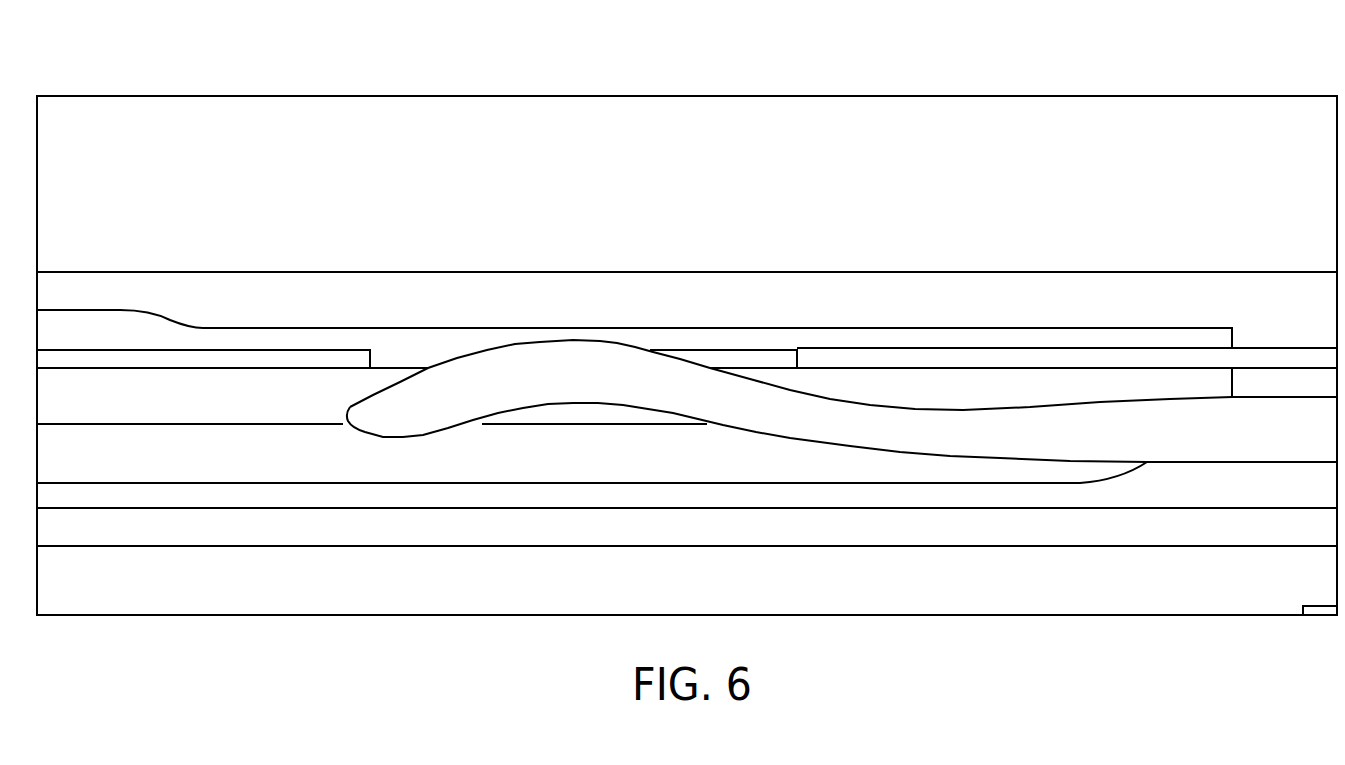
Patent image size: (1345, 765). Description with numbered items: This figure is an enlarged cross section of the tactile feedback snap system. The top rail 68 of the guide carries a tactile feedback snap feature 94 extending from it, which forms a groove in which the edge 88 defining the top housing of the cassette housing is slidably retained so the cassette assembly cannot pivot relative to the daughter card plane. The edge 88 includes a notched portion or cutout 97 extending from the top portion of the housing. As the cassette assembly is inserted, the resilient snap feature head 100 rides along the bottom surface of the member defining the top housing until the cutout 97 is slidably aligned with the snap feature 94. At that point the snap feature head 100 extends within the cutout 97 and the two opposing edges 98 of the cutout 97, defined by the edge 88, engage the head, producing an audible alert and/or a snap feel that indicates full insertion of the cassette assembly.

The top rail 68 is at (128, 290).
The edge 88 is at (1028, 357).
The tactile feedback snap feature 94 is at (408, 437).
The cutout 97 is at (725, 340).
The opposing edges of cutout 98 is at (372, 350).
The snap feature head 100 is at (487, 348).